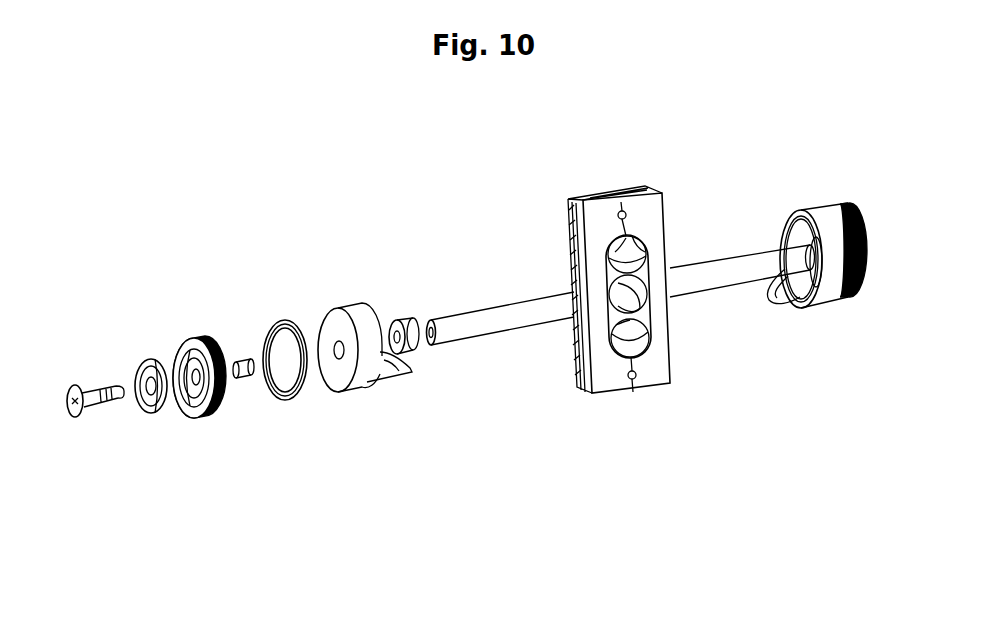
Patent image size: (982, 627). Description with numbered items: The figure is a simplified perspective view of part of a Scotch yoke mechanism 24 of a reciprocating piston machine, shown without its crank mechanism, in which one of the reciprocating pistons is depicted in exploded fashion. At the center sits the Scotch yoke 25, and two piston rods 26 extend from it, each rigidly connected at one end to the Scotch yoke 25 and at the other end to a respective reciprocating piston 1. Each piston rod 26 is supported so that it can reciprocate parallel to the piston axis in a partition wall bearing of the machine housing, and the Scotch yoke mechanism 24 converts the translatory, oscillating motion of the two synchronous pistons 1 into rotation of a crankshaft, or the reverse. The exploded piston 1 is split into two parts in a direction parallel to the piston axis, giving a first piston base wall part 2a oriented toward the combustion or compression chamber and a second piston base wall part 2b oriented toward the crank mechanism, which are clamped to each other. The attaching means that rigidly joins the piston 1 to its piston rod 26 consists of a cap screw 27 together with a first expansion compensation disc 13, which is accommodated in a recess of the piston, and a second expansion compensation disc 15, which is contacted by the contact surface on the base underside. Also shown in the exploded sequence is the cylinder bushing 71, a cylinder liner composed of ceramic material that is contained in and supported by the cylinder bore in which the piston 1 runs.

The reciprocating piston 1 is at (831, 283).
The first piston base wall part 2a is at (205, 418).
The second piston base wall part 2b is at (366, 383).
The first expansion compensation disc 13 is at (152, 413).
The second expansion compensation disc 15 is at (405, 321).
The Scotch yoke mechanism 24 is at (260, 158).
The Scotch yoke 25 is at (613, 380).
The piston rod 26 is at (507, 320).
The cap screw 27 is at (76, 418).
The cylinder bushing 71 is at (287, 400).